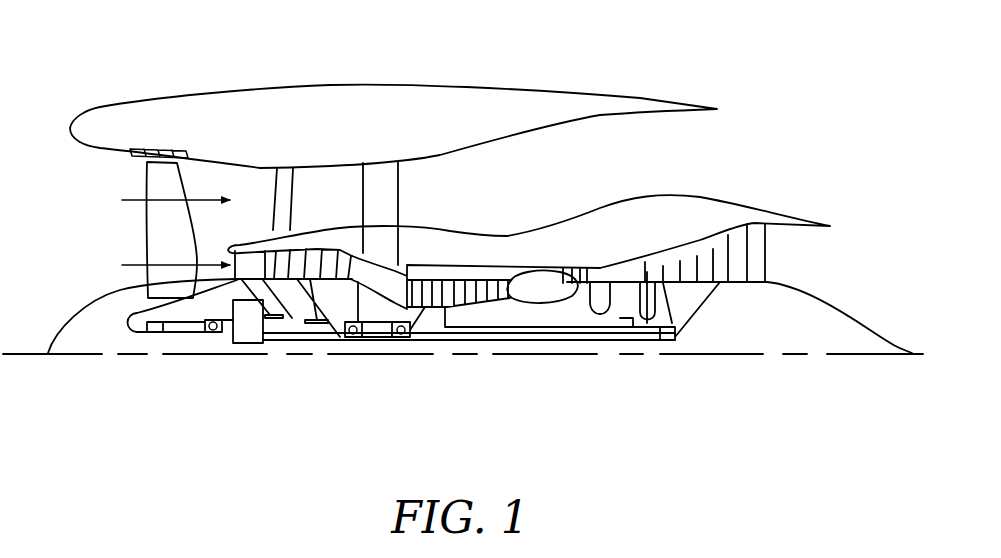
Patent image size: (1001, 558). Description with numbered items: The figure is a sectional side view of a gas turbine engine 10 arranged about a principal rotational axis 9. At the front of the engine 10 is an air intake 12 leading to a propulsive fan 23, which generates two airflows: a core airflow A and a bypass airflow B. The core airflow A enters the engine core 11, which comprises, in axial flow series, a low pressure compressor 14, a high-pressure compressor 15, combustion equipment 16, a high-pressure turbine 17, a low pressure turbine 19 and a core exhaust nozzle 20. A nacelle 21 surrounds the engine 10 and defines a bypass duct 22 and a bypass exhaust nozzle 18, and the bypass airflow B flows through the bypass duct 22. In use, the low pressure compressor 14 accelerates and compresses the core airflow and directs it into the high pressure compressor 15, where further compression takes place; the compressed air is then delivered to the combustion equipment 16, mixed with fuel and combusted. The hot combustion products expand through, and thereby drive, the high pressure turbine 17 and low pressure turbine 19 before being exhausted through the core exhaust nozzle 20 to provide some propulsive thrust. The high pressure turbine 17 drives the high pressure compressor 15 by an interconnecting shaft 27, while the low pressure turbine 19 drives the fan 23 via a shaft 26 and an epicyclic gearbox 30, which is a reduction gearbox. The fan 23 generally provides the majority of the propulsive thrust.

The principal rotational axis 9 is at (773, 357).
The gas turbine engine 10 is at (148, 101).
The core 11 is at (507, 252).
The air intake 12 is at (100, 179).
The low pressure compressor 14 is at (317, 258).
The high-pressure compressor 15 is at (463, 287).
The combustion equipment 16 is at (538, 292).
The high-pressure turbine 17 is at (600, 273).
The bypass exhaust nozzle 18 is at (710, 152).
The low pressure turbine 19 is at (737, 243).
The core exhaust nozzle 20 is at (793, 258).
The nacelle 21 is at (377, 97).
The bypass duct 22 is at (651, 155).
The propulsive fan 23 is at (150, 232).
The shaft 26 is at (455, 342).
The interconnecting shaft 27 is at (497, 330).
The epicyclic gearbox 30 is at (246, 330).